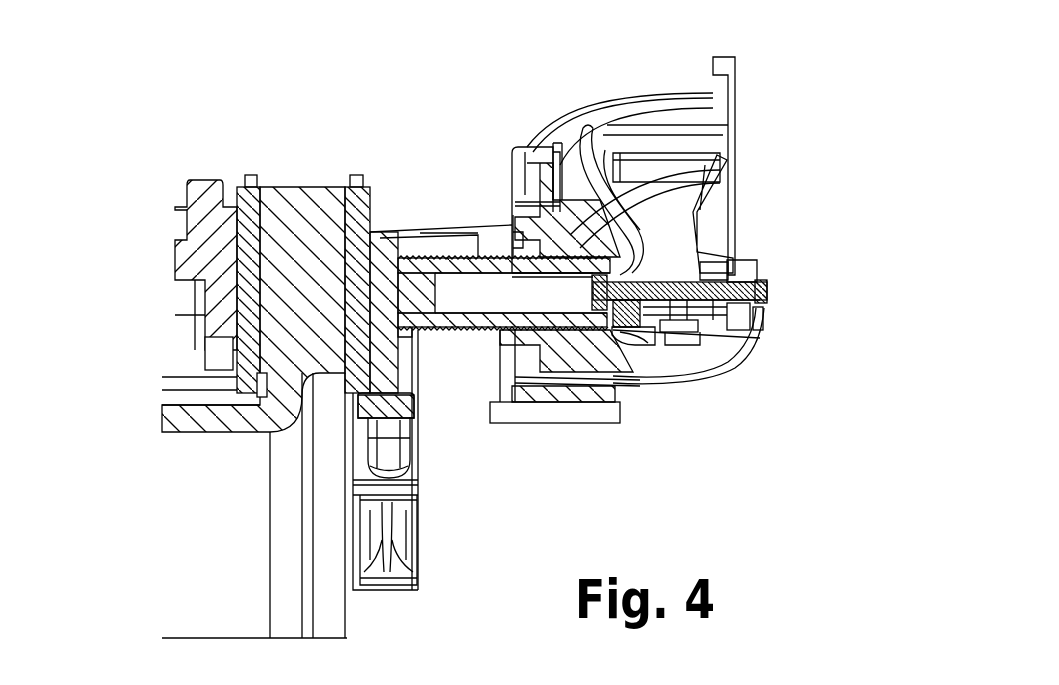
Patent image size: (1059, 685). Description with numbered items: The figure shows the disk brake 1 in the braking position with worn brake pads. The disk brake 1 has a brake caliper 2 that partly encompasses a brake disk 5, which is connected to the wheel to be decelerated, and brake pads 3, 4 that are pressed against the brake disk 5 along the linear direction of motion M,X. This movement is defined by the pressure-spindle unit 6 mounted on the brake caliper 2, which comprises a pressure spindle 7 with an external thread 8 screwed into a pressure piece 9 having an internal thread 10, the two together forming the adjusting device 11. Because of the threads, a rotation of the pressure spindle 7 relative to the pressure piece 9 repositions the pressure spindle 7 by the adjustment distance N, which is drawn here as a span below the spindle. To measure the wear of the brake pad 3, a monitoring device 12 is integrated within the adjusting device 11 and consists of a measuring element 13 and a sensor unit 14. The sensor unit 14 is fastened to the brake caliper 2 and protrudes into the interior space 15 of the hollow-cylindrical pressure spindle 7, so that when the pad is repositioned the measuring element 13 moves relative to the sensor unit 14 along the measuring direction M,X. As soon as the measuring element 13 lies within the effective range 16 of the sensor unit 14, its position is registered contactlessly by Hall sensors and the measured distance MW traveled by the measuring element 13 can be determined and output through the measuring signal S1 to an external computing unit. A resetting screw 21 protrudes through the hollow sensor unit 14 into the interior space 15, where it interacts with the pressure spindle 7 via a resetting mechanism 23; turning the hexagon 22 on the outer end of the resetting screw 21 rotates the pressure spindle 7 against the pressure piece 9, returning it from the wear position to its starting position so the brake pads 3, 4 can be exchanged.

The disk brake 1 is at (145, 166).
The brake caliper 2 is at (725, 363).
The brake pad 3 is at (350, 192).
The brake pad 4 is at (258, 192).
The brake disk 5 is at (295, 213).
The pressure-spindle unit 6 is at (538, 270).
The pressure spindle 7 is at (498, 333).
The external thread 8 is at (508, 333).
The pressure piece 9 is at (567, 223).
The internal thread 10 is at (505, 265).
The adjusting device 11 is at (553, 340).
The monitoring device 12 is at (630, 337).
The measuring element 13 is at (623, 273).
The sensor unit 14 is at (755, 312).
The interior space 15 is at (465, 290).
The effective range 16 is at (730, 276).
The resetting screw 21 is at (690, 322).
The hexagon 22 is at (770, 296).
The resetting mechanism 23 is at (640, 260).
The measured distance MW is at (710, 270).
The adjustment distance N is at (400, 336).
The measuring direction and direction of motion M,X is at (640, 527).
The measuring signal S1 is at (770, 290).